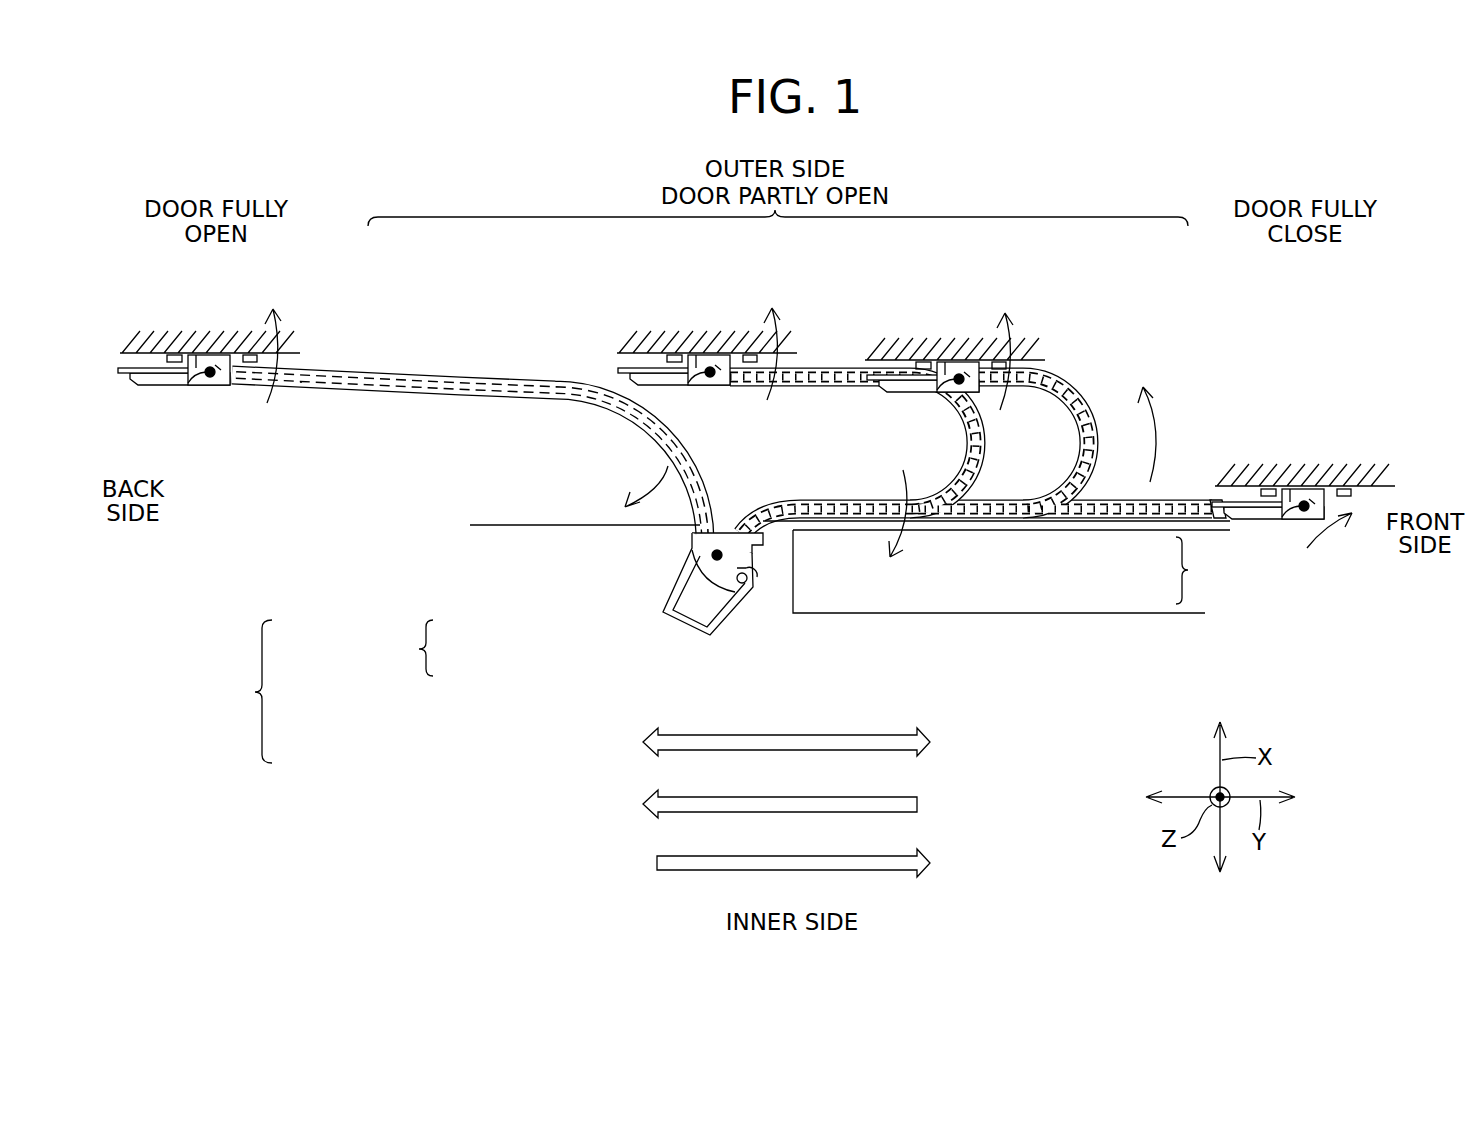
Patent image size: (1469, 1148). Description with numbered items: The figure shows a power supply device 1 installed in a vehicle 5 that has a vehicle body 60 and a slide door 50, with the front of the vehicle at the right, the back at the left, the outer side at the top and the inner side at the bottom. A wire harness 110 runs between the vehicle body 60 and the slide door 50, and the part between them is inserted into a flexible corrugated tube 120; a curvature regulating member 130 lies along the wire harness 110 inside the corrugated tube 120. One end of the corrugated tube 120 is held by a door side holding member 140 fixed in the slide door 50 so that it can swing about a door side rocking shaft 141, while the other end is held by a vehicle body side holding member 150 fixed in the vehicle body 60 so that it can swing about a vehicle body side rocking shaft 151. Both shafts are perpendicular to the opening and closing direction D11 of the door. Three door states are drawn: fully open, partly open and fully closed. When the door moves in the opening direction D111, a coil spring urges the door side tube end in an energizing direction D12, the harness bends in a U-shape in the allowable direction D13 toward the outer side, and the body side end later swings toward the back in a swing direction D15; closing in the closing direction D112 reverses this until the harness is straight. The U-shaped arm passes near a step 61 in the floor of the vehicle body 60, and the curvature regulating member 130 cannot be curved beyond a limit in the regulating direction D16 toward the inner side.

The power supply device 1 is at (279, 691).
The vehicle 5 is at (429, 648).
The slide door 50 is at (125, 353).
The vehicle body 60 is at (504, 525).
The step 61 is at (1188, 570).
The wire harness 110 is at (425, 402).
The corrugated tube 120 is at (420, 380).
The curvature regulating member 130 is at (1123, 531).
The door side holding member 140 is at (163, 386).
The door side rocking shaft 141 is at (209, 367).
The vehicle body side holding member 150 is at (668, 590).
The vehicle body side rocking shaft 151 is at (712, 555).
The opening and closing direction D11 is at (786, 755).
The opening direction D111 is at (780, 816).
The closing direction D112 is at (793, 876).
The energizing direction D12 is at (283, 338).
The allowable direction D13 is at (1160, 430).
The swing direction D15 is at (645, 466).
The regulating direction D16 is at (905, 543).